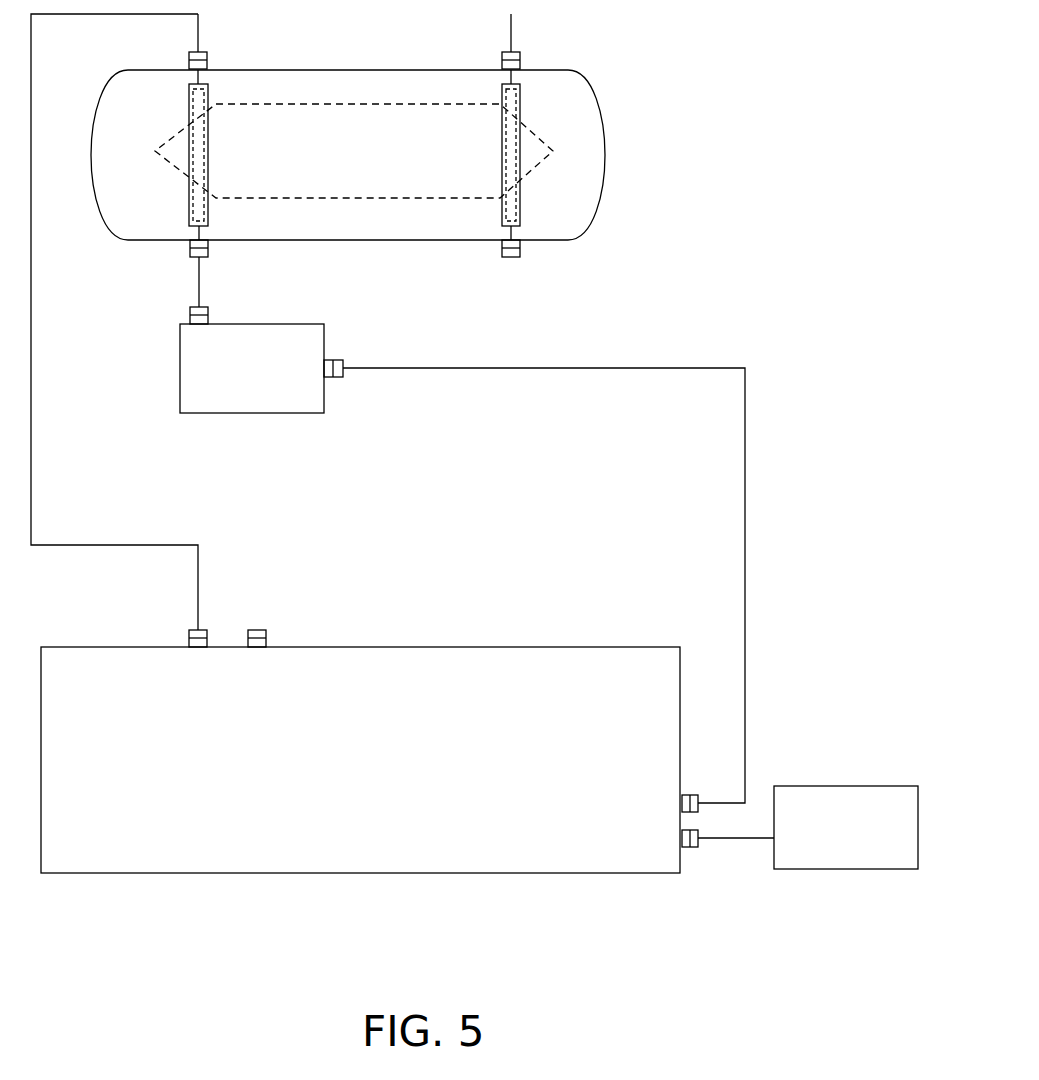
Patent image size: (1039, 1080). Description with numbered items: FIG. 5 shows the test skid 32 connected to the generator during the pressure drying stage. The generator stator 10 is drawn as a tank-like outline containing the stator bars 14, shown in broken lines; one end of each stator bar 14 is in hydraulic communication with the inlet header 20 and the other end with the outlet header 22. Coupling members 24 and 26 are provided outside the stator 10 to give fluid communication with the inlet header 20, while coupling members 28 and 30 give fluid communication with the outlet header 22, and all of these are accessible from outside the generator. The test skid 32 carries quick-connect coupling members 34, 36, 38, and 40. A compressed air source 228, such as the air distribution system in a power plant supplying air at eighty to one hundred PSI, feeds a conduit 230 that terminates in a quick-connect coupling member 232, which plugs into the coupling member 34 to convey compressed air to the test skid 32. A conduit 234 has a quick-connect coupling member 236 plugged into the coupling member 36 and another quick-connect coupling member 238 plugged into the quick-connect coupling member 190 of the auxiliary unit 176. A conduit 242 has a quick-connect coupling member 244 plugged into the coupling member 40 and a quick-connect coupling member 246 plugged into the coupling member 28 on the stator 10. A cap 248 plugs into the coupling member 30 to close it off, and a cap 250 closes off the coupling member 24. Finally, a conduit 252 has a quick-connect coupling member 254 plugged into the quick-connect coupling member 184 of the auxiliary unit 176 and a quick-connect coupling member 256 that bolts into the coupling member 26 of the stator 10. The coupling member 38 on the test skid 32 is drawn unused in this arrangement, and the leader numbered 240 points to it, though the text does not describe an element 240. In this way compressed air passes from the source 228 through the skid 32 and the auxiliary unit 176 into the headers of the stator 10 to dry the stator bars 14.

The stator 10 is at (606, 96).
The stator bar 14 is at (300, 104).
The inlet header 20 is at (198, 142).
The outlet header 22 is at (510, 152).
The coupling member 24 is at (207, 64).
The coupling member 26 is at (208, 246).
The coupling member 28 is at (520, 64).
The coupling member 30 is at (520, 244).
The test skid 32 is at (449, 647).
The quick-connect coupling member 34 is at (686, 848).
The quick-connect coupling member 36 is at (686, 795).
The quick-connect coupling member 38 is at (266, 644).
The quick-connect coupling member 40 is at (189, 644).
The auxiliary unit 176 is at (254, 413).
The quick-connect coupling member 184 is at (208, 318).
The quick-connect coupling member 190 is at (326, 358).
The compressed air source 228 is at (862, 786).
The conduit 230 is at (740, 840).
The quick-connect coupling member 232 is at (694, 848).
The conduit 234 is at (745, 472).
The quick-connect coupling member 236 is at (696, 796).
The quick-connect coupling member 238 is at (336, 378).
The connector 240 is at (261, 630).
The conduit 242 is at (120, 545).
The quick-connect coupling member 244 is at (203, 630).
The quick-connect coupling member 246 is at (509, 52).
The cap 248 is at (505, 257).
The cap 250 is at (197, 52).
The conduit 252 is at (200, 272).
The quick-connect coupling member 254 is at (190, 312).
The quick-connect coupling member 256 is at (190, 251).